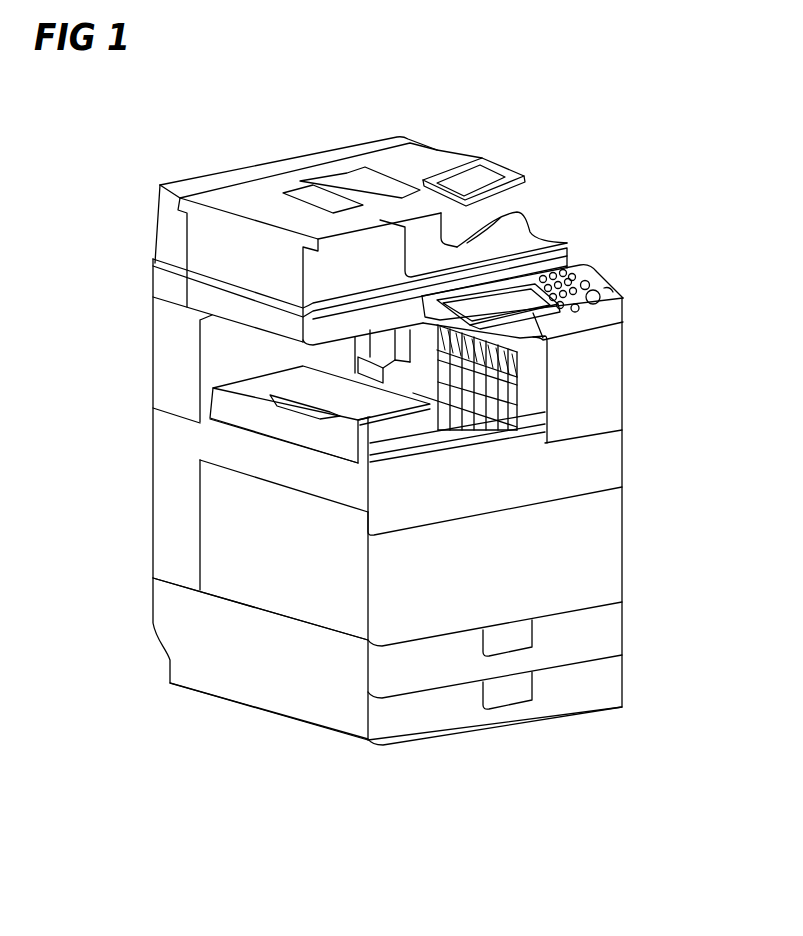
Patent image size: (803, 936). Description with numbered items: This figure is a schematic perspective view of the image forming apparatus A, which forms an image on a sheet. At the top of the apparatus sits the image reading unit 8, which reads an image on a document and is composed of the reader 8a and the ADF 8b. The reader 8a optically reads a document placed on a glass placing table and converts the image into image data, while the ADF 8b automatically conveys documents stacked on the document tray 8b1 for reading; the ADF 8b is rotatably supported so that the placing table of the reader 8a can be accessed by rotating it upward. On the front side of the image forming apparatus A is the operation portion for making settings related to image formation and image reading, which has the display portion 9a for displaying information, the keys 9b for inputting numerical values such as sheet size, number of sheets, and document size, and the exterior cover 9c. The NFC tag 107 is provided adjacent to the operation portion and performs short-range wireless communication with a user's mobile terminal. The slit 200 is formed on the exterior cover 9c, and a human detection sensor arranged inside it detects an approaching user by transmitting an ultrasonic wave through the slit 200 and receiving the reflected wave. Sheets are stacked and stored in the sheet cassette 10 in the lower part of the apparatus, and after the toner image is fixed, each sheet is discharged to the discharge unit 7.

The image forming apparatus A is at (541, 139).
The image reading unit 8 is at (323, 215).
The reader 8a is at (337, 295).
The ADF (Automatic Document Feeder) 8b is at (175, 243).
The document tray 8b1 is at (402, 170).
The display portion 9a is at (562, 331).
The keys 9b is at (580, 283).
The exterior cover 9c is at (585, 262).
The NFC tag 107 is at (614, 308).
The slit 200 is at (520, 352).
The discharge unit 7 is at (427, 422).
The sheet cassette 10 is at (565, 690).